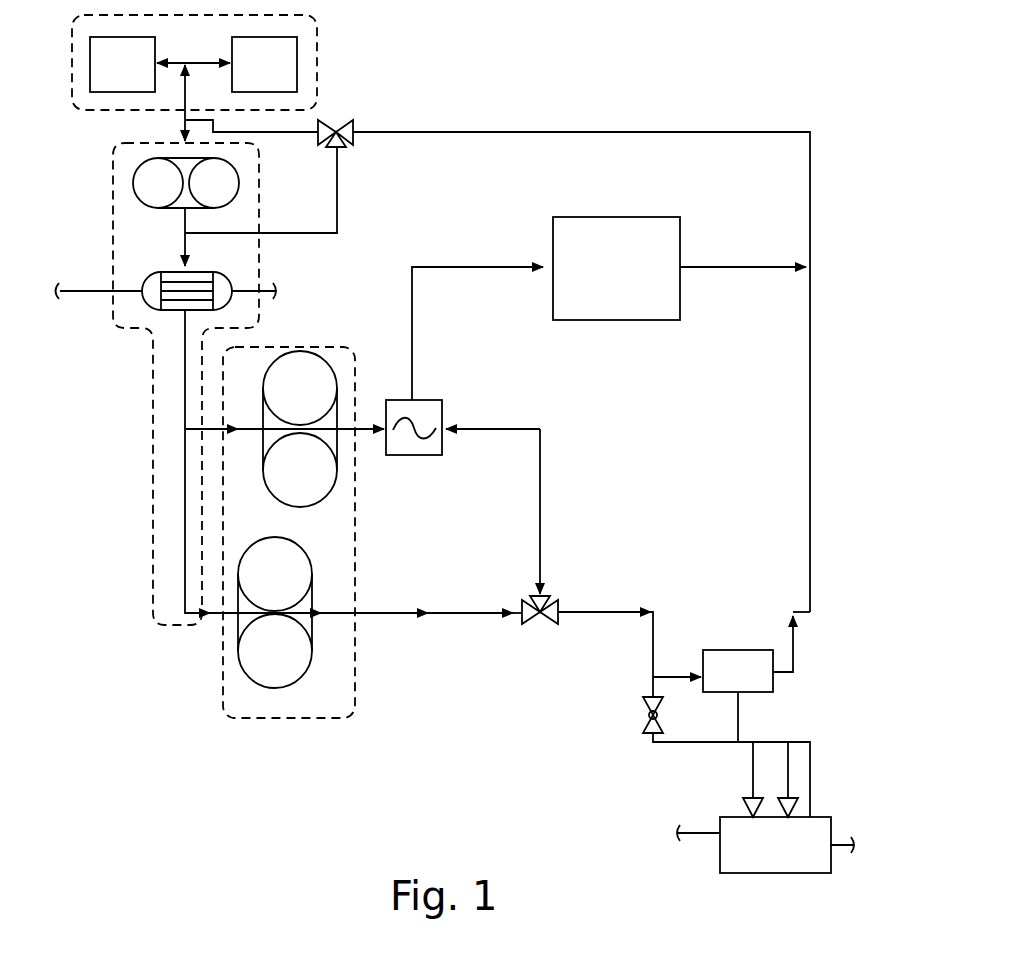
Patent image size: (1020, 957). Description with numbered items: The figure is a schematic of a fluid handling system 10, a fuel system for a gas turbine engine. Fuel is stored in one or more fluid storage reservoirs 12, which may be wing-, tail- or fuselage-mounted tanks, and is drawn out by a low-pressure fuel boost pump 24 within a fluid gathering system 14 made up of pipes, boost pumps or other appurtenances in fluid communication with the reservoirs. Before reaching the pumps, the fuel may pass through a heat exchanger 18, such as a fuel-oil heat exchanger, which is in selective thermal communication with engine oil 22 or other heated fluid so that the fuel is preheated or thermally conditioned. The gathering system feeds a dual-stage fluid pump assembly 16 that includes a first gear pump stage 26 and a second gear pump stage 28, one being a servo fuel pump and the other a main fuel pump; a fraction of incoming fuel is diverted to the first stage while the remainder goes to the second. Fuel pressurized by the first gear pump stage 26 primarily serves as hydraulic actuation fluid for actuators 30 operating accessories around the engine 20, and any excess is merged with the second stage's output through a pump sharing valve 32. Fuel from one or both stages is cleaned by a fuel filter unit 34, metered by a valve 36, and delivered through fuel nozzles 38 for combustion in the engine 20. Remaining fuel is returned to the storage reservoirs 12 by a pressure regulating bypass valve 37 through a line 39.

The fluid handling system 10 is at (708, 92).
The fluid storage reservoir 12 is at (70, 72).
The fluid gathering system 14 is at (126, 390).
The dual-stage fluid pump assembly 16 is at (309, 336).
The heat exchanger 18 is at (166, 273).
The engine 20 is at (717, 857).
The engine oil 22 is at (84, 285).
The low-pressure fuel boost pump 24 is at (128, 185).
The first gear pump stage 26 is at (338, 395).
The second gear pump stage 28 is at (312, 585).
The actuators 30 is at (637, 213).
The pump sharing valve 32 is at (537, 628).
The fuel filter unit 34 is at (434, 396).
The valve 36 is at (645, 717).
The pressure regulating bypass valve 37 is at (752, 646).
The fuel nozzles 38 is at (746, 803).
The line 39 is at (745, 262).